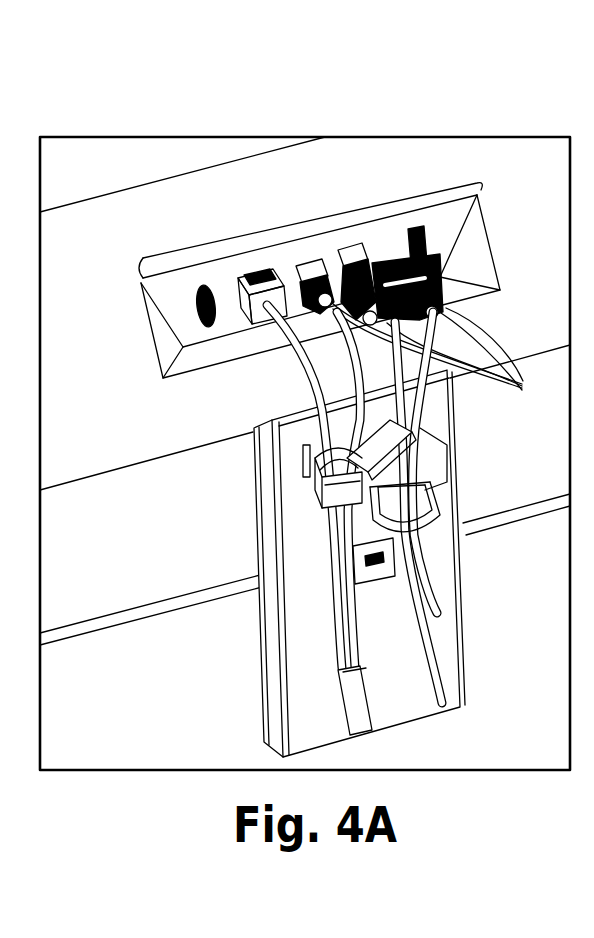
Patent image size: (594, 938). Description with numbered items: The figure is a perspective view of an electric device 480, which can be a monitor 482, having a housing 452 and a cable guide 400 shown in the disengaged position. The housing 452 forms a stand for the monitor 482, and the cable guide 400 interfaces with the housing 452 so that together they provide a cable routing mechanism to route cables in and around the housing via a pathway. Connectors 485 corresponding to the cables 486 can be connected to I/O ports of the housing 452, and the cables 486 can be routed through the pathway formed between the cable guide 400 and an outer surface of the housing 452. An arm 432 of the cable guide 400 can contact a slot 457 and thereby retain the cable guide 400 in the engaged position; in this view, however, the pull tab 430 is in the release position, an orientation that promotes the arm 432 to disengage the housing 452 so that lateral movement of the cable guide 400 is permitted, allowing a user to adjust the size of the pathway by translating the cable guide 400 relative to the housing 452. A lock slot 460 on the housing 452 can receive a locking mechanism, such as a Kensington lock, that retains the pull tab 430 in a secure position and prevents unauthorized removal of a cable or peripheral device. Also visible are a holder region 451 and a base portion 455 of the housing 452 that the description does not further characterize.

The electric device 480 is at (106, 98).
The cable guide 400 is at (302, 265).
The monitor 482 is at (404, 165).
The connectors 485 is at (188, 216).
The cables 486 is at (448, 352).
The cable holder 451 is at (342, 531).
The housing 452 is at (254, 613).
The holder base 455 is at (300, 449).
The slot 457 is at (313, 482).
The arm 432 is at (300, 531).
The pull tab 430 is at (447, 477).
The lock slot 460 is at (395, 548).